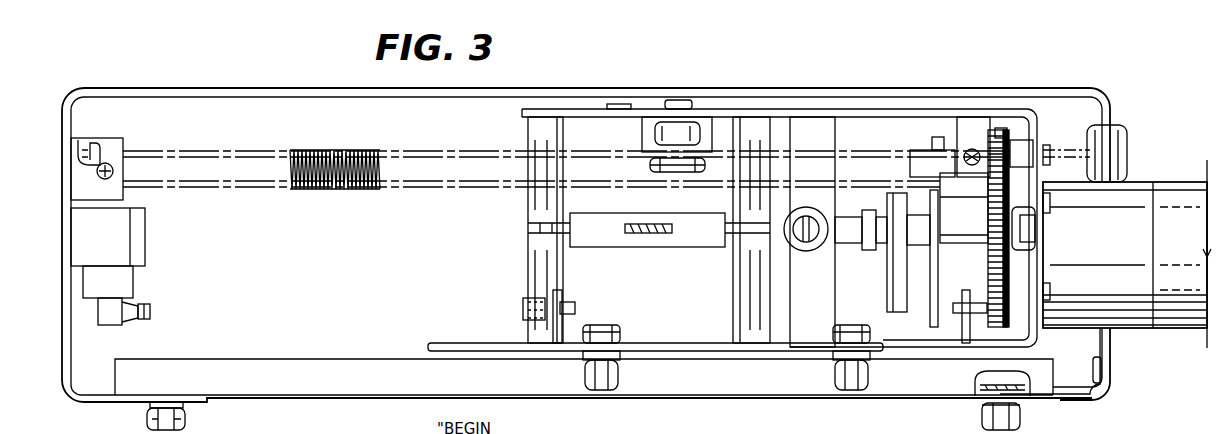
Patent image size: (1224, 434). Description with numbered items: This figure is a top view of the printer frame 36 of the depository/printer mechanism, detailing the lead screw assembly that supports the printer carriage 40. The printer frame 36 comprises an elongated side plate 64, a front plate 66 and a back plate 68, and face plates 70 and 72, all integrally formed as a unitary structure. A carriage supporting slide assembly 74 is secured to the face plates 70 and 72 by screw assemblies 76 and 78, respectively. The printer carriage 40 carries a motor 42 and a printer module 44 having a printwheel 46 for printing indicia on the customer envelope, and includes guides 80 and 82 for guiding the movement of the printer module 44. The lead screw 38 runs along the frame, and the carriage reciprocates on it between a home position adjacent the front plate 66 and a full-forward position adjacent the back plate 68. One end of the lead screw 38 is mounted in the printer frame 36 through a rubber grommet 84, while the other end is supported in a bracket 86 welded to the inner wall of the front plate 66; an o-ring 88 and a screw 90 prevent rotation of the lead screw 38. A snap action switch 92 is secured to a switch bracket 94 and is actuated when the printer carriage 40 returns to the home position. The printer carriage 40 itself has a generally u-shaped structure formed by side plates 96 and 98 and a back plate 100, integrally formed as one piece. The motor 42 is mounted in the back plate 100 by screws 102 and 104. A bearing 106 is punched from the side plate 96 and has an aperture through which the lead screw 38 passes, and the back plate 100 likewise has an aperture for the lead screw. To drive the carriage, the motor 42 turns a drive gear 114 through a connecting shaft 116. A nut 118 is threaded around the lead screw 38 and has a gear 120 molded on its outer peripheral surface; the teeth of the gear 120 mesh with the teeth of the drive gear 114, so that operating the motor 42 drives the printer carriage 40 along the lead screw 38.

The printer frame 36 is at (622, 72).
The lead screw 38 is at (322, 150).
The printer carriage 40 is at (678, 337).
The motor 42 is at (1164, 251).
The printer module 44 is at (630, 250).
The printwheel 46 is at (655, 225).
The side plate 64 is at (346, 88).
The front plate 66 is at (63, 182).
The back plate 68 is at (1110, 108).
The face plate 70 is at (125, 400).
The face plate 72 is at (1048, 398).
The carriage supporting slide assembly 74 is at (286, 386).
The screw assembly 76 is at (194, 418).
The screw assembly 78 is at (969, 416).
The guide 80 is at (528, 264).
The guide 82 is at (735, 260).
The rubber grommet 84 is at (1125, 150).
The bracket 86 is at (112, 150).
The o-ring 88 is at (93, 142).
The screw 90 is at (120, 176).
The snap action switch 92 is at (138, 310).
The switch bracket 94 is at (126, 282).
The side plate 96 is at (806, 110).
The side plate 98 is at (688, 345).
The back plate 100 is at (1040, 127).
The screw 102 is at (1048, 202).
The screw 104 is at (1048, 292).
The bearing 106 is at (948, 193).
The drive gear 114 is at (990, 265).
The connecting shaft 116 is at (1022, 218).
The nut 118 is at (1013, 150).
The gear 120 is at (1003, 127).